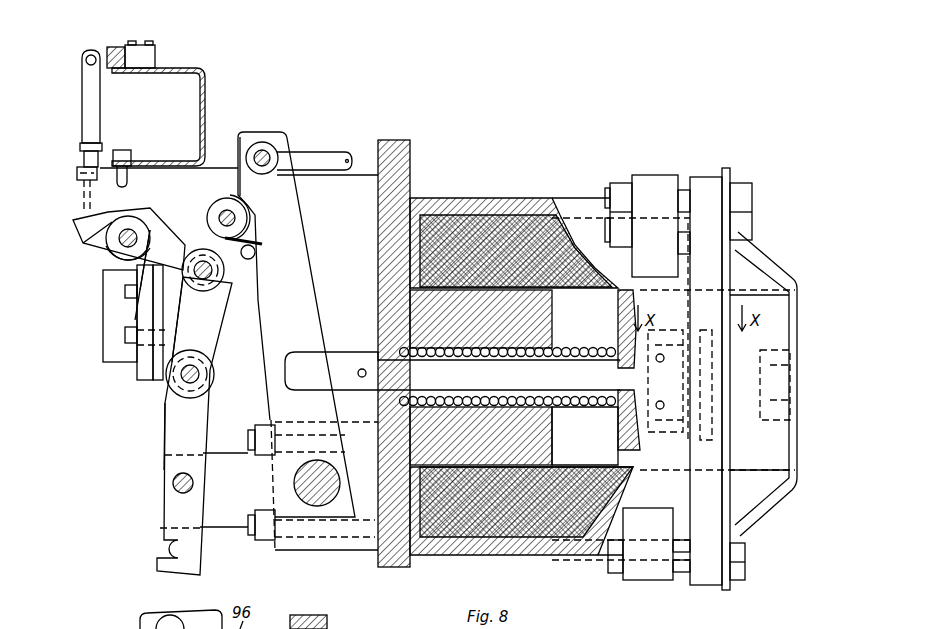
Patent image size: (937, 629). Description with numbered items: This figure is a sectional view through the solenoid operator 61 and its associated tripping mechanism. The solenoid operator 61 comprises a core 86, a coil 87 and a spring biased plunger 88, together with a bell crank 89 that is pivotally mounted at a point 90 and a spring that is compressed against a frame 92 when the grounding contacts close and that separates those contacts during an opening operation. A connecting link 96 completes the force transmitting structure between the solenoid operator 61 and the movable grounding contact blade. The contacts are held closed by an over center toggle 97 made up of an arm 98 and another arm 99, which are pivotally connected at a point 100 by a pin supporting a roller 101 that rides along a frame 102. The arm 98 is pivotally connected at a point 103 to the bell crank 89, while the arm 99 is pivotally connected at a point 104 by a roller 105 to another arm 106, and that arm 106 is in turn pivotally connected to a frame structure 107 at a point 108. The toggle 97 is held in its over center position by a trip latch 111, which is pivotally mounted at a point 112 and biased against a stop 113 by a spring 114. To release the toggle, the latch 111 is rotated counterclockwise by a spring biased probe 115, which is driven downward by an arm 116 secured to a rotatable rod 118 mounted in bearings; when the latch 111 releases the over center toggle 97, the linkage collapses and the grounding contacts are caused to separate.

The solenoid operator 61 is at (594, 440).
The core 86 is at (553, 332).
The coil 87 is at (492, 215).
The spring biased plunger 88 is at (330, 360).
The bell crank 89 is at (308, 292).
The pivot of bell crank 90 is at (294, 481).
The frame 92 is at (411, 156).
The connecting link 96 is at (322, 152).
The over center toggle 97 is at (250, 411).
The arm 98 is at (170, 430).
The arm 99 is at (210, 333).
The pivot point 100 is at (200, 375).
The roller 101 is at (168, 392).
The frame 102 is at (167, 316).
The pivot point 103 is at (172, 486).
The pivot point 104 is at (215, 272).
The roller 105 is at (220, 286).
The arm 106 is at (207, 210).
The frame structure 107 is at (224, 176).
The pivot point 108 is at (218, 200).
The trip latch 111 is at (163, 232).
The pivot point 112 is at (128, 226).
The stop 113 is at (120, 278).
The spring 114 is at (90, 243).
The spring biased probe 115 is at (78, 192).
The arm 116 is at (111, 51).
The rotatable rod 118 is at (117, 47).